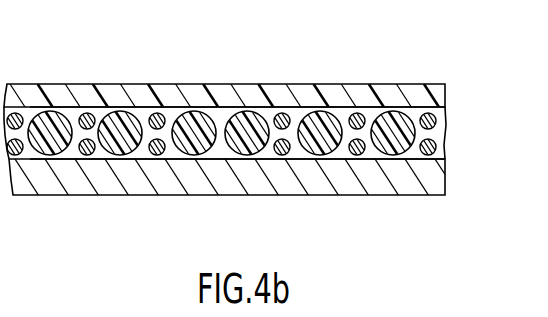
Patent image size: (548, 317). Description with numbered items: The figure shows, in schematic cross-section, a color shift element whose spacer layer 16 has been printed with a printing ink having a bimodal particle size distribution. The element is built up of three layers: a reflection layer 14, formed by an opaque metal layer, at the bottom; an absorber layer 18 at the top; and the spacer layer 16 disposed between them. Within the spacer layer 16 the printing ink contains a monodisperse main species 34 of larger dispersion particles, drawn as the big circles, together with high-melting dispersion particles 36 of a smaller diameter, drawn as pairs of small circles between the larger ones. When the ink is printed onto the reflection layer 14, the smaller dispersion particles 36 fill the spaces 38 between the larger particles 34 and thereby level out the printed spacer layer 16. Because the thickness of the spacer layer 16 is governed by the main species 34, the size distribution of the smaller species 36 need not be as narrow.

The reflection layer 14 is at (436, 176).
The spacer layer 16 is at (440, 134).
The absorber layer 18 is at (430, 96).
The monodisperse main species 34 is at (195, 129).
The high-melting dispersion particles 36 is at (79, 117).
The spaces 38 is at (105, 153).